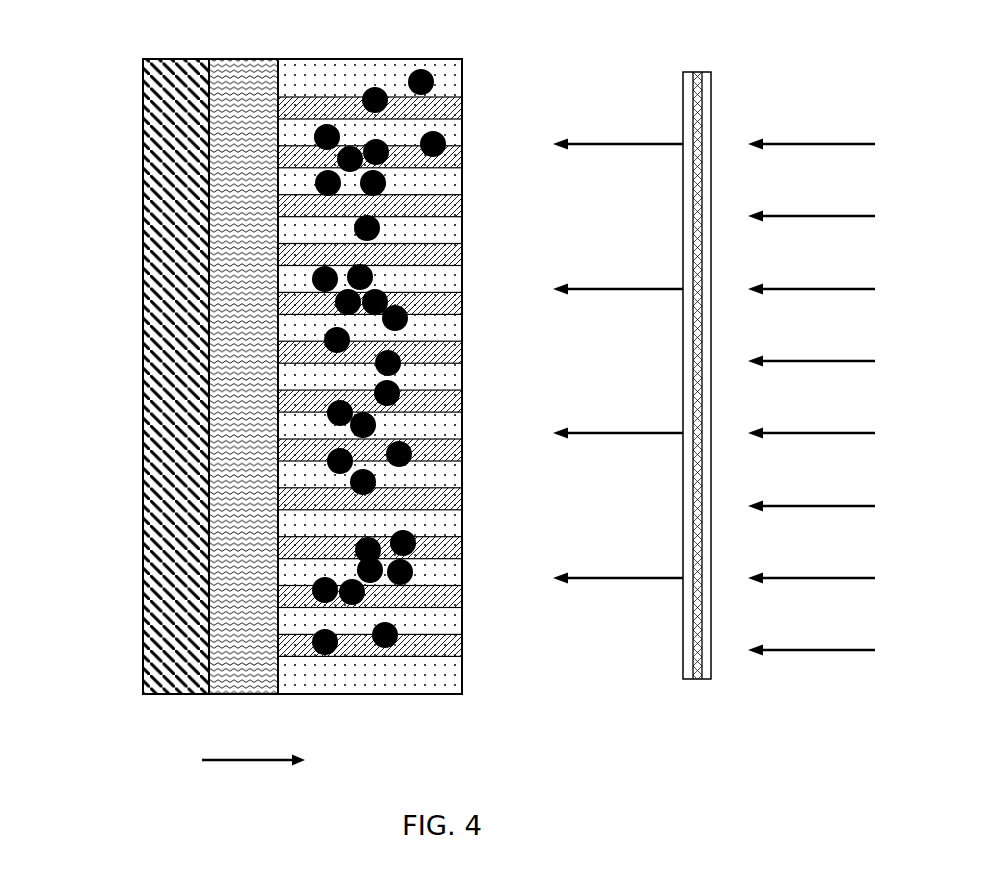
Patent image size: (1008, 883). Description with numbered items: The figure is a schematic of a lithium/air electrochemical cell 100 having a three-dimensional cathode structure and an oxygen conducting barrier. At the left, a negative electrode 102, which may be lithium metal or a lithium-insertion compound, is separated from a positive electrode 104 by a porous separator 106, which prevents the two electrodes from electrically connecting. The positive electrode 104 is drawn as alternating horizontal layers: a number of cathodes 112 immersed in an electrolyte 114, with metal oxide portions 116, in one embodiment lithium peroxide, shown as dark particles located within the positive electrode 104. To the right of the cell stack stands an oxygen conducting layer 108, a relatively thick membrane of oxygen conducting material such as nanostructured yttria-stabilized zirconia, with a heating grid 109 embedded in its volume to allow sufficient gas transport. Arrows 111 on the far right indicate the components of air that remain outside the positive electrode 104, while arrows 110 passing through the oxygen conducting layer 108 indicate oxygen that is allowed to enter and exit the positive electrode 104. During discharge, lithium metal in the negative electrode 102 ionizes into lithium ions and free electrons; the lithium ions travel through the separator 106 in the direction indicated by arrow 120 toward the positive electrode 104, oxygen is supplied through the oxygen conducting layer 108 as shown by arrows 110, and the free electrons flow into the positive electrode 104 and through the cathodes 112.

The electrochemical cell 100 is at (78, 113).
The negative electrode 102 is at (143, 322).
The positive electrode 104 is at (336, 381).
The porous separator 106 is at (232, 59).
The oxygen conducting layer 108 is at (691, 353).
The heating grid 109 is at (697, 72).
The arrows indicating oxygen 110 is at (587, 290).
The arrows indicating other air components 111 is at (775, 290).
The cathodes 112 is at (344, 97).
The electrolyte 114 is at (364, 680).
The metal oxide portions 116 is at (427, 68).
The arrow indicating Li+ ion direction 120 is at (212, 760).